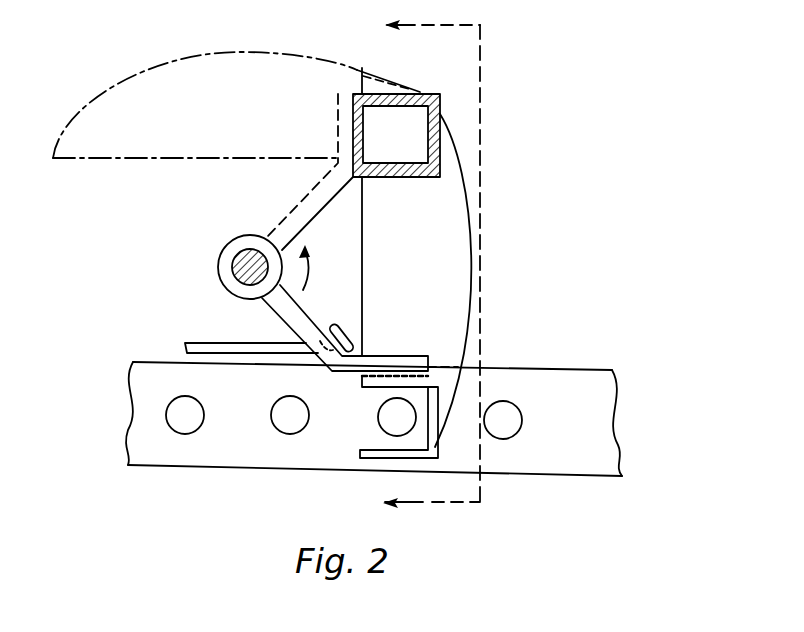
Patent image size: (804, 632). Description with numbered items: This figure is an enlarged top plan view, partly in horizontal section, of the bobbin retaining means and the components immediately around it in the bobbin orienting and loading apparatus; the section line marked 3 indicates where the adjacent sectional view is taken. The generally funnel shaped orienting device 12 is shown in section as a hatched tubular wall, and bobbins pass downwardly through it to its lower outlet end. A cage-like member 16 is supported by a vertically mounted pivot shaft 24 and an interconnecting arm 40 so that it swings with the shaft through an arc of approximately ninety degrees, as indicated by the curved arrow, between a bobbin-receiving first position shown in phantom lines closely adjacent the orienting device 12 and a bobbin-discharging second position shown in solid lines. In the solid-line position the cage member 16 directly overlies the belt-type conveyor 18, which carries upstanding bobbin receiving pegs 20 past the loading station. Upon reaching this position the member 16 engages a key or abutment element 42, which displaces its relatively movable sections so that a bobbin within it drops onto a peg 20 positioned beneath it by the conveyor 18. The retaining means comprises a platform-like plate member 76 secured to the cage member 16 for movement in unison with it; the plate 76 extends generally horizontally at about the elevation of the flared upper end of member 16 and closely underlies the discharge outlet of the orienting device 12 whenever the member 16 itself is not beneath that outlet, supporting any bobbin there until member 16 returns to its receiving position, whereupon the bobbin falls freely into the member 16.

The section line 3- 3 is at (418, 262).
The funnel shaped orienting device 12 is at (442, 99).
The cage-like member 16 is at (376, 452).
The belt-type conveyor 18 is at (572, 386).
The bobbin receiving pegs 20 is at (283, 399).
The pivot shaft 24 is at (238, 268).
The interconnecting arm 40 is at (293, 315).
The key or abutment element 42 is at (221, 343).
The platform-like plate member 76 is at (453, 273).